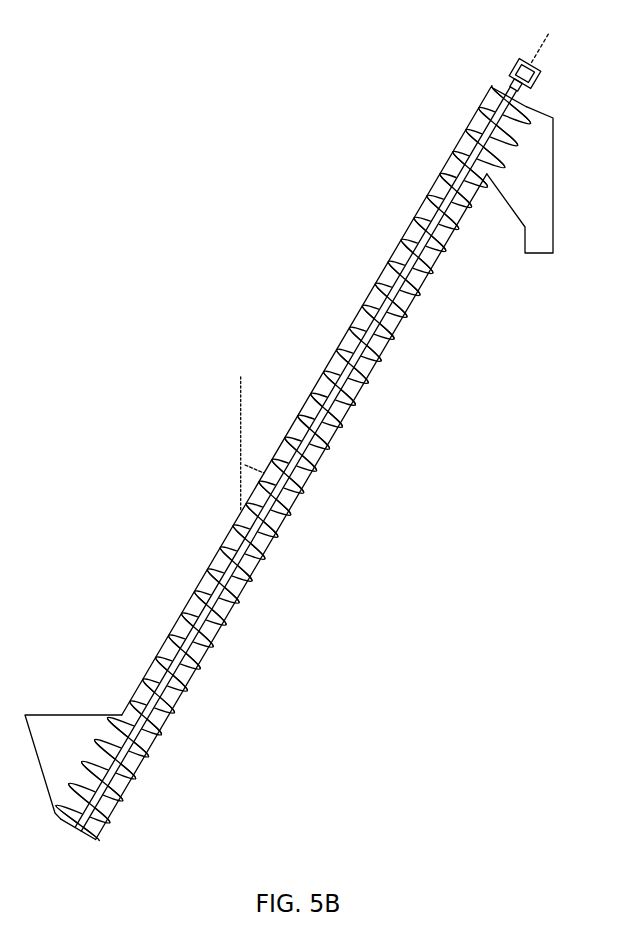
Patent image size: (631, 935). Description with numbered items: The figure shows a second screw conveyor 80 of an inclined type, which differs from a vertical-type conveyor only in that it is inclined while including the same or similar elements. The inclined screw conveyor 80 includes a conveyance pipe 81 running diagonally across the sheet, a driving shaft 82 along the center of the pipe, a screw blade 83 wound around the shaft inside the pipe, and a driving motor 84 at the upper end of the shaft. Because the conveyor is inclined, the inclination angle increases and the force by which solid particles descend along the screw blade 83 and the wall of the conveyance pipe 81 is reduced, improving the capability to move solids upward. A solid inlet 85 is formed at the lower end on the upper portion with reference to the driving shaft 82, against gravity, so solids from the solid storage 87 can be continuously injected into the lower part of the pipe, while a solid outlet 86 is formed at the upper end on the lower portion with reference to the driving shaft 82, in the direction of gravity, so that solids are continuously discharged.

The second screw conveyor 80 is at (265, 82).
The conveyance pipe 81 is at (353, 313).
The driving shaft 82 is at (400, 245).
The screw blade 83 is at (424, 198).
The driving motor 84 is at (513, 72).
The solid inlet 85 is at (80, 767).
The solid outlet 86 is at (553, 167).
The solid storage 87 is at (45, 730).